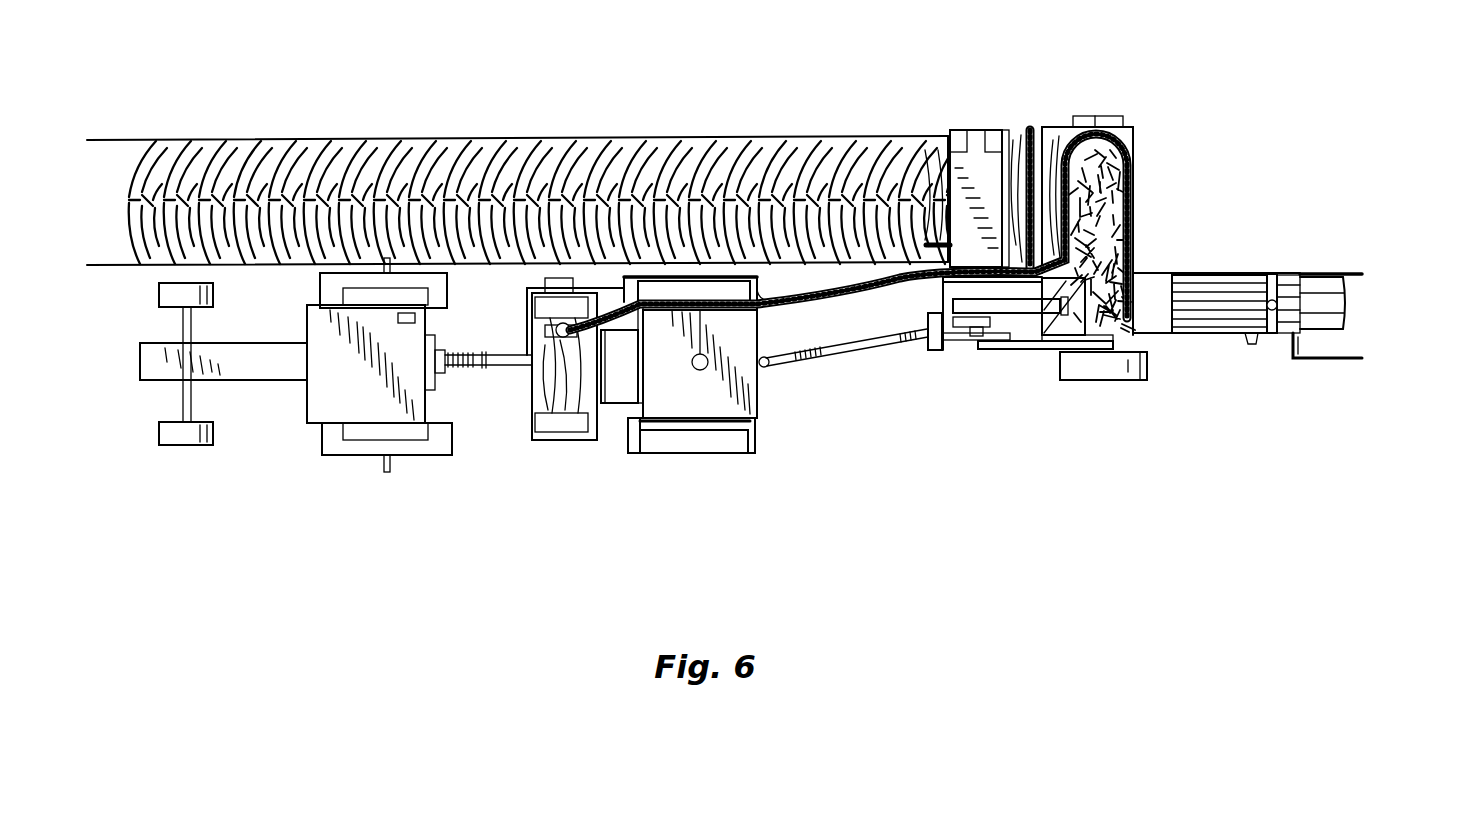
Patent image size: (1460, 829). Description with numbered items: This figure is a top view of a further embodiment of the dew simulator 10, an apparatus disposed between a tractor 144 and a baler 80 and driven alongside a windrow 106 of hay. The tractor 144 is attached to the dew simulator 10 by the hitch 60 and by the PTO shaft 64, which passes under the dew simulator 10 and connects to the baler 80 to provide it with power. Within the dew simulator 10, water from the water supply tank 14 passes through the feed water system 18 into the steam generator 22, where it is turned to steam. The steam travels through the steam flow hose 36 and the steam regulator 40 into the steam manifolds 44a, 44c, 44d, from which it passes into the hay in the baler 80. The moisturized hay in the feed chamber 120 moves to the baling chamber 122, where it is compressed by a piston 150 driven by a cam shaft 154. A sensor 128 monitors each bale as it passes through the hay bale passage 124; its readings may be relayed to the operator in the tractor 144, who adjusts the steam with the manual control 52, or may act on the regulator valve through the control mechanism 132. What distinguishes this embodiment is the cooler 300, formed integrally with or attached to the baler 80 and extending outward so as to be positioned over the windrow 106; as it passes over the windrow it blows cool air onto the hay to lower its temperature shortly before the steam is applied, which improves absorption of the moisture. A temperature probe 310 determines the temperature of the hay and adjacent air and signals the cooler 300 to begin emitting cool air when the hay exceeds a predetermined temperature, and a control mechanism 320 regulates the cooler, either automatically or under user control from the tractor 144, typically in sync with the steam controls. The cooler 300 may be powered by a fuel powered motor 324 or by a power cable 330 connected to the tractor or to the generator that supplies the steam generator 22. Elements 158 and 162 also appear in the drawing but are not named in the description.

The dew simulator 10 is at (771, 439).
The water supply tank 14 is at (690, 412).
The feed water system 18 is at (612, 405).
The steam generator 22 is at (555, 400).
The steam flow hose 36 is at (820, 300).
The steam regulator 40 is at (605, 400).
The steam manifold 44a is at (1030, 130).
The steam manifold 44c is at (1135, 172).
The steam manifold 44d is at (1078, 118).
The manual control 52 is at (440, 320).
The hitch 60 is at (555, 330).
The PTO shaft 64 is at (460, 365).
The baler 80 is at (970, 350).
The windrow 106 is at (378, 138).
The feed chamber 120 is at (1130, 130).
The baling chamber 122 is at (1120, 343).
The hay bale passage 124 is at (1215, 272).
The sensor 128 is at (1255, 345).
The control mechanism 132 is at (548, 392).
The tractor 144 is at (280, 375).
The piston 150 is at (1070, 338).
The cam shaft 154 is at (945, 355).
The mounting bracket 158 is at (1337, 313).
The piston rod 162 is at (1305, 275).
The cooler 300 is at (985, 130).
The temperature probe 310 is at (935, 243).
The control mechanism 320 is at (990, 130).
The fuel powered motor 324 is at (950, 130).
The power cable 330 is at (775, 290).